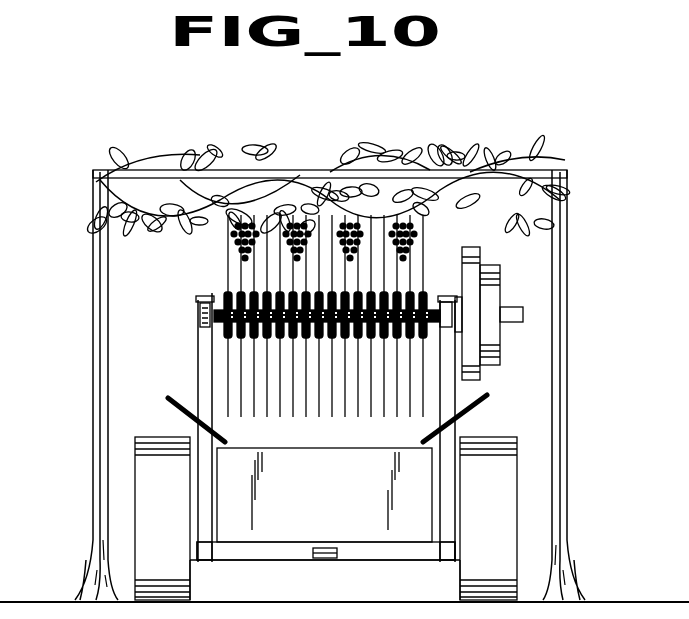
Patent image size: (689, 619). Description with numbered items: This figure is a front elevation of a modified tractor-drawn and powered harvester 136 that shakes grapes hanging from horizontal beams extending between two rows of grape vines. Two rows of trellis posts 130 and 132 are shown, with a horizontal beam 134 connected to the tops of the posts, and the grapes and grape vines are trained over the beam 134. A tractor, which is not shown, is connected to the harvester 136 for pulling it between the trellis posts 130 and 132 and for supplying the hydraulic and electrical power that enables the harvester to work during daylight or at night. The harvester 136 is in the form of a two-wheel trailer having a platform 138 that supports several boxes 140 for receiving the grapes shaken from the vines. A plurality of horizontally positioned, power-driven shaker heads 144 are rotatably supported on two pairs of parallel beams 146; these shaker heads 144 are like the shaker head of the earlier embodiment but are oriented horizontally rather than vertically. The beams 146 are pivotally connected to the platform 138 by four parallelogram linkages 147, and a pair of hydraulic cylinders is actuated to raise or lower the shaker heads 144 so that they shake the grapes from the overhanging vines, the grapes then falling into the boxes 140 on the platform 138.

The trellis post 130 is at (100, 515).
The trellis post 132 is at (560, 515).
The horizontal beam 134 is at (310, 158).
The harvester 136 is at (190, 341).
The platform 138 is at (345, 560).
The box 140 is at (348, 505).
The shaker head 144 is at (220, 262).
The parallel beam 146 is at (205, 300).
The parallelogram linkage 147 is at (200, 375).